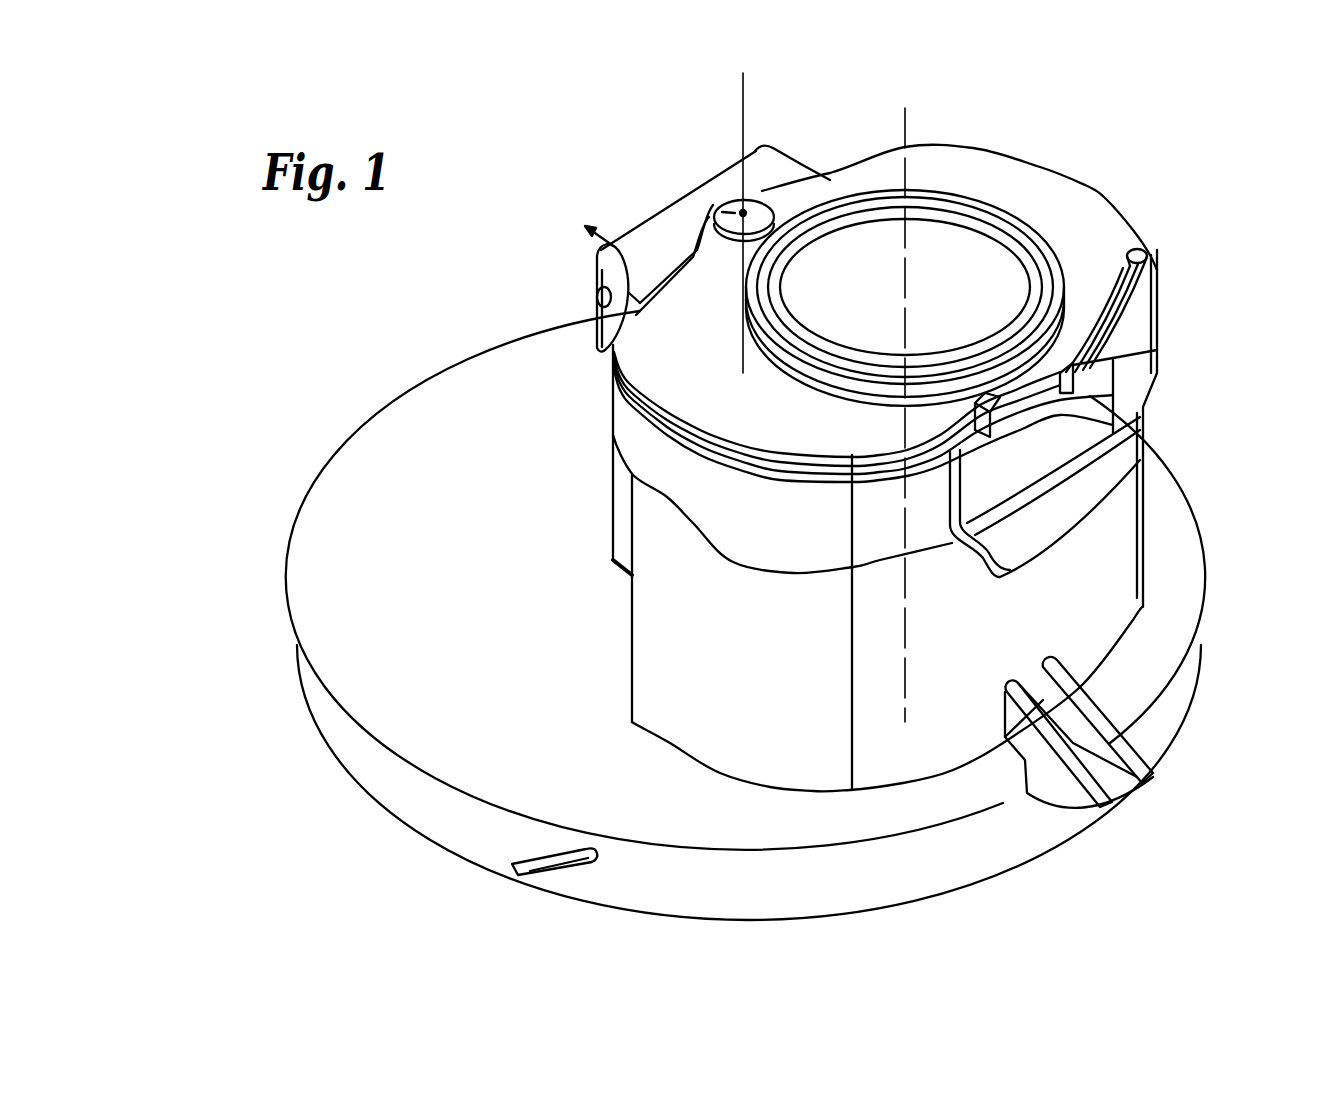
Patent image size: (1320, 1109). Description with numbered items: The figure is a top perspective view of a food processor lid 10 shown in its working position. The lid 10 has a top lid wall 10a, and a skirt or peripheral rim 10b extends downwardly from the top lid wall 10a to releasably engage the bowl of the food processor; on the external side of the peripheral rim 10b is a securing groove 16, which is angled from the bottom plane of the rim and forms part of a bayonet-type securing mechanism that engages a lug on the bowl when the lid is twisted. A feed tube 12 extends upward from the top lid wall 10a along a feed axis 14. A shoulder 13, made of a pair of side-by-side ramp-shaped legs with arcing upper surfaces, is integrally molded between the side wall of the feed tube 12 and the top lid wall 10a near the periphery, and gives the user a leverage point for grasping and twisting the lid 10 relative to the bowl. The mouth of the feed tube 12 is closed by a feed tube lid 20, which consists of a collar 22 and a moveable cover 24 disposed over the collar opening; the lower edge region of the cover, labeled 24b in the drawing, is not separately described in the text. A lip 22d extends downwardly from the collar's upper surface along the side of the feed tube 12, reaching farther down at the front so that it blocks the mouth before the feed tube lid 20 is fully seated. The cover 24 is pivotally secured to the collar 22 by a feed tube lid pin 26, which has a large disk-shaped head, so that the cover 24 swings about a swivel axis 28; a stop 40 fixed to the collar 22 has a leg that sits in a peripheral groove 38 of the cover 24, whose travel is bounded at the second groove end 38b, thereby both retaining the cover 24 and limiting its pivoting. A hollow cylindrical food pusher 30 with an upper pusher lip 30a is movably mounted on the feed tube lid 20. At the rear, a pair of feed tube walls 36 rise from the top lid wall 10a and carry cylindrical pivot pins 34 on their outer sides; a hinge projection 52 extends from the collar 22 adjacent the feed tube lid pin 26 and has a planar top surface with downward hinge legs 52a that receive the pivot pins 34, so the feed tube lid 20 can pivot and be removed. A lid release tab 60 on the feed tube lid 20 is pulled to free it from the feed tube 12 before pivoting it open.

The lid 10 is at (698, 615).
The top lid wall 10a is at (350, 567).
The peripheral rim 10b is at (348, 747).
The feed tube 12 is at (667, 697).
The shoulder 13 is at (1093, 730).
The feed axis 14 is at (905, 123).
The securing groove 16 is at (533, 857).
The feed tube lid 20 is at (1150, 190).
The collar 22 is at (1185, 345).
The lip 22d is at (833, 537).
The cover 24 is at (1053, 173).
The lower rim edge 24b is at (823, 380).
The feed tube lid pin 26 is at (707, 204).
The swivel axis 28 is at (742, 99).
The food pusher 30 is at (878, 247).
The upper pusher lip 30a is at (977, 195).
The pivot pin 34 is at (597, 293).
The feed tube walls 36 is at (623, 540).
The peripheral groove 38 is at (1160, 283).
The second groove end 38b is at (1142, 238).
The stop 40 is at (1080, 420).
The hinge projection 52 is at (605, 200).
The hinge legs 52a is at (598, 341).
The lid release tab 60 is at (1110, 490).